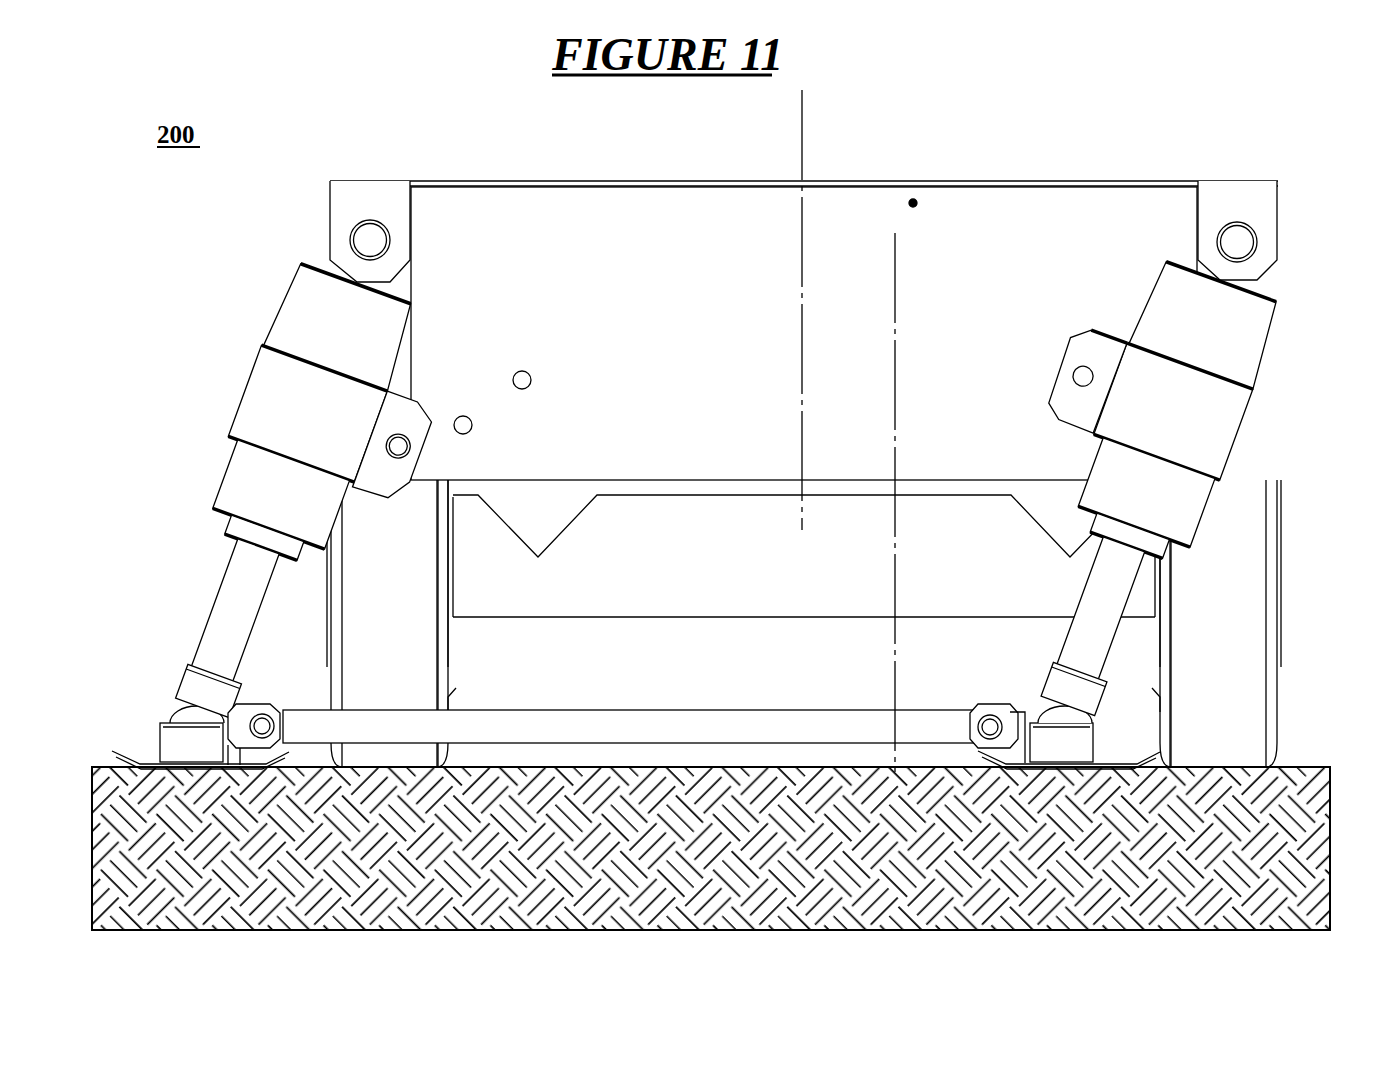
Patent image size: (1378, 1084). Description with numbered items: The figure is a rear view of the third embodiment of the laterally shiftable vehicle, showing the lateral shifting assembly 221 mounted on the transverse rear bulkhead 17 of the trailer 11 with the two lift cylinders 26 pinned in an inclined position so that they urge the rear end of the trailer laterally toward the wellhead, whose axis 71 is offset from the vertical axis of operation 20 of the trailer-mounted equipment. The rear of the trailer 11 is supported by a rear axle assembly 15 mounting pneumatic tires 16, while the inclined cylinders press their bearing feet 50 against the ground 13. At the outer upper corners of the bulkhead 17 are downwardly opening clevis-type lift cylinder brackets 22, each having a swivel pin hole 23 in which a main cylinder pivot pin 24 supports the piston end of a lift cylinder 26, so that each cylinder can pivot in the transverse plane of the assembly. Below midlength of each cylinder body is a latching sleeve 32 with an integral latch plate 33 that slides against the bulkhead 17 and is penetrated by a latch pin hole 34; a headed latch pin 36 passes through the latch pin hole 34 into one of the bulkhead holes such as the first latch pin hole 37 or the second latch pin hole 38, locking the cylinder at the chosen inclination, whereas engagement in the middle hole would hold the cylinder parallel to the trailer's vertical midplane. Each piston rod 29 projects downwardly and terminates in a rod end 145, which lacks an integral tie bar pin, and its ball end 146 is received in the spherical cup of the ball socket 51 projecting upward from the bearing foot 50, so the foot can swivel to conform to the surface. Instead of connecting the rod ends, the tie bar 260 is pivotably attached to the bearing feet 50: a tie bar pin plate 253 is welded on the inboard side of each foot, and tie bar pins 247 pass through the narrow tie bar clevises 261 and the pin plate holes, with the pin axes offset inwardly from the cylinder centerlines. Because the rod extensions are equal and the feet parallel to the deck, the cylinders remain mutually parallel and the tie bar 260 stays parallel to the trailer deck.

The semitrailer 11 is at (1038, 182).
The ground 13 is at (578, 765).
The rear axle assembly 15 is at (633, 617).
The pneumatic tire 16 is at (452, 690).
The transverse rear bulkhead 17 is at (913, 203).
The vertical axis of operation 20 is at (802, 153).
The lift cylinder bracket 22 is at (1277, 220).
The swivel pin hole 23 is at (315, 252).
The main cylinder pivot pin 24 is at (357, 222).
The lift cylinder 26 is at (287, 298).
The piston rod 29 is at (213, 610).
The latching sleeve 32 is at (243, 393).
The latch plate 33 is at (400, 437).
The latch pin hole 34 is at (1089, 372).
The latch pin 36 is at (413, 407).
The first latch pin hole 37 is at (523, 372).
The second latch pin hole 38 is at (467, 418).
The bearing foot 50 is at (135, 760).
The ball socket 51 is at (157, 730).
The wellhead axis 71 is at (895, 273).
The rod end 145 is at (187, 670).
The ball end 146 is at (180, 707).
The lateral shifting assembly 221 is at (1242, 427).
The tie bar pin 247 is at (977, 710).
The tie bar pin plate 253 is at (1013, 707).
The tie bar 260 is at (745, 710).
The tie bar clevis 261 is at (947, 710).